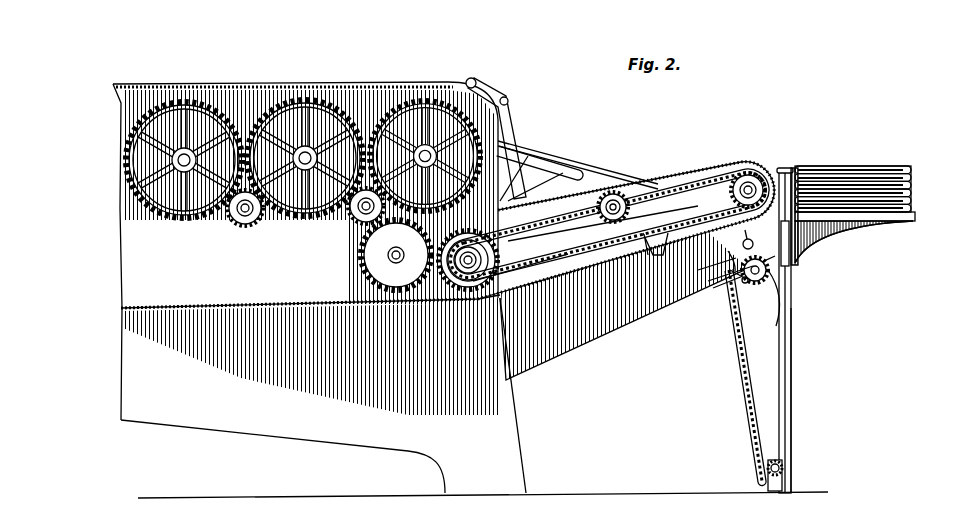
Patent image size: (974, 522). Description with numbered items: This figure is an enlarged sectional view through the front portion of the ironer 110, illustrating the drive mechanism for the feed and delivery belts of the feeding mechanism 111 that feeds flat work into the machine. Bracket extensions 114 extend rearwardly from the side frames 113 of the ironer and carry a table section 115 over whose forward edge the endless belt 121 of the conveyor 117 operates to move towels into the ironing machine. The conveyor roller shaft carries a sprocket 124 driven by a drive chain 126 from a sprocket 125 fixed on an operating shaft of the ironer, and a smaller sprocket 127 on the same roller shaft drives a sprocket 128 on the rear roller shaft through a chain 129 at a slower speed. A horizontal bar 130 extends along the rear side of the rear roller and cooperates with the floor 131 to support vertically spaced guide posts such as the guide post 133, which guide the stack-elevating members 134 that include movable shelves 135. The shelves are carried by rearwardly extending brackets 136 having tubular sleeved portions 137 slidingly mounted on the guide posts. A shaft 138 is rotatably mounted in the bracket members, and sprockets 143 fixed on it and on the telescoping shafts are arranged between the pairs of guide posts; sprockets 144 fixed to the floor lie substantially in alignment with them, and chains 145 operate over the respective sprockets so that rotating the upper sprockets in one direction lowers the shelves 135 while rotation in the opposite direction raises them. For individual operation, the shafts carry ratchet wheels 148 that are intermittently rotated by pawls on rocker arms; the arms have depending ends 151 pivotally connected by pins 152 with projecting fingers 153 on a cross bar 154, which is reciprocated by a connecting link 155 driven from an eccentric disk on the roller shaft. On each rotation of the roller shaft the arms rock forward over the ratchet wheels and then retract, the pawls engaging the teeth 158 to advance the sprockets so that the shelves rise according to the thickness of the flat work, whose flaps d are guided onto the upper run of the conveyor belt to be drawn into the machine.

The ironer 110 is at (220, 422).
The feeding mechanism 111 is at (858, 156).
The side frames 113 is at (302, 424).
The bracket extensions 114 is at (520, 355).
The table section 115 is at (548, 158).
The conveyor 117 is at (528, 153).
The endless belt 121 is at (573, 161).
The sprocket 124 is at (580, 200).
The sprocket 125 is at (462, 244).
The drive chain 126 is at (500, 218).
The smaller sprocket 127 is at (622, 182).
The sprocket 128 is at (738, 168).
The chain 129 is at (706, 165).
The horizontal bar 130 is at (774, 165).
The floor 131 is at (790, 486).
The guide post 133 is at (784, 429).
The stack-elevating members 134 is at (838, 228).
The movable shelves 135 is at (907, 209).
The brackets 136 is at (824, 238).
The tubular sleeved portions 137 is at (790, 243).
The shaft 138 is at (738, 226).
The sprockets 143 is at (748, 278).
The sprockets 144 is at (776, 453).
The chains 145 is at (746, 426).
The ratchet wheels 148 is at (782, 262).
The depending ends 151 is at (720, 254).
The pins 152 is at (735, 260).
The projecting fingers 153 is at (716, 276).
The cross bar 154 is at (712, 272).
The connecting link 155 is at (640, 246).
The teeth 158 is at (765, 299).
The flaps d is at (880, 162).